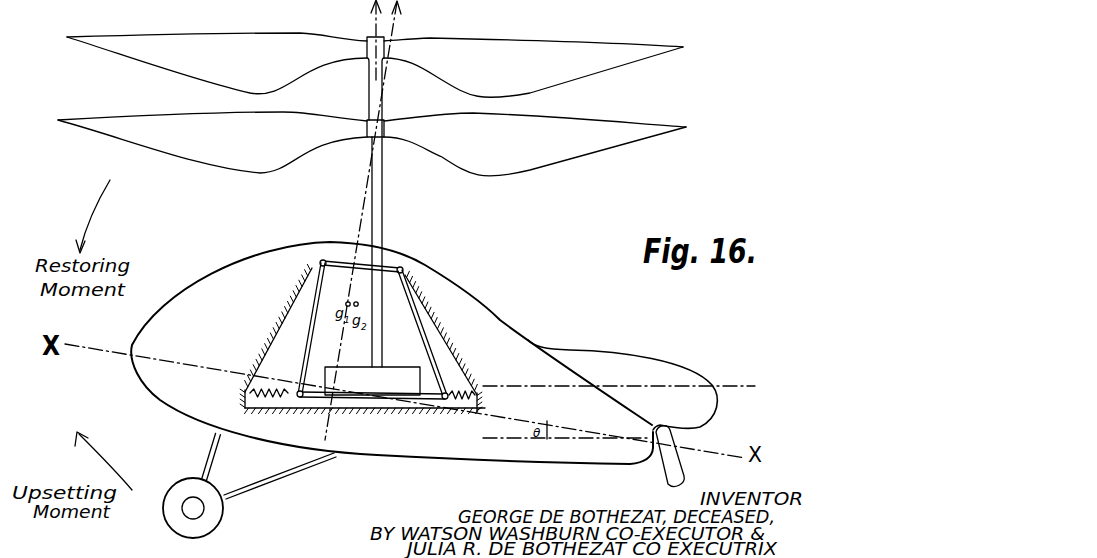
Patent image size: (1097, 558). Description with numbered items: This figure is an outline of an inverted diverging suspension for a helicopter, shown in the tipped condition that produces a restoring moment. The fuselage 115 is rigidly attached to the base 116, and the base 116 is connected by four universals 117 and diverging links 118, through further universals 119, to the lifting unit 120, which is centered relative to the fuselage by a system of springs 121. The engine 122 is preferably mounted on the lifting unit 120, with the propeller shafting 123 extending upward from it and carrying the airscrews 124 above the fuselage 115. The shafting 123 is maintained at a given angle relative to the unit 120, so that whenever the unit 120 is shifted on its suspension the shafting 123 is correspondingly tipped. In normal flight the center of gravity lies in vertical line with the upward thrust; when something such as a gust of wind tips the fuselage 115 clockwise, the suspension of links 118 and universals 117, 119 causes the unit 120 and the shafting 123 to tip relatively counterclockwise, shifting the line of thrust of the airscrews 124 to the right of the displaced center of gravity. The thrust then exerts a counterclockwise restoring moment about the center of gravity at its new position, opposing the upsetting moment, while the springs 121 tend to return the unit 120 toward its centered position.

The fuselage 115 is at (490, 328).
The base 116 is at (383, 267).
The universals 117 is at (323, 258).
The diverging links 118 is at (480, 293).
The universals 119 is at (295, 398).
The lifting unit 120 is at (368, 372).
The springs 121 is at (275, 392).
The engine 122 is at (393, 373).
The propeller shafting 123 is at (383, 195).
The airscrews 124 is at (630, 62).